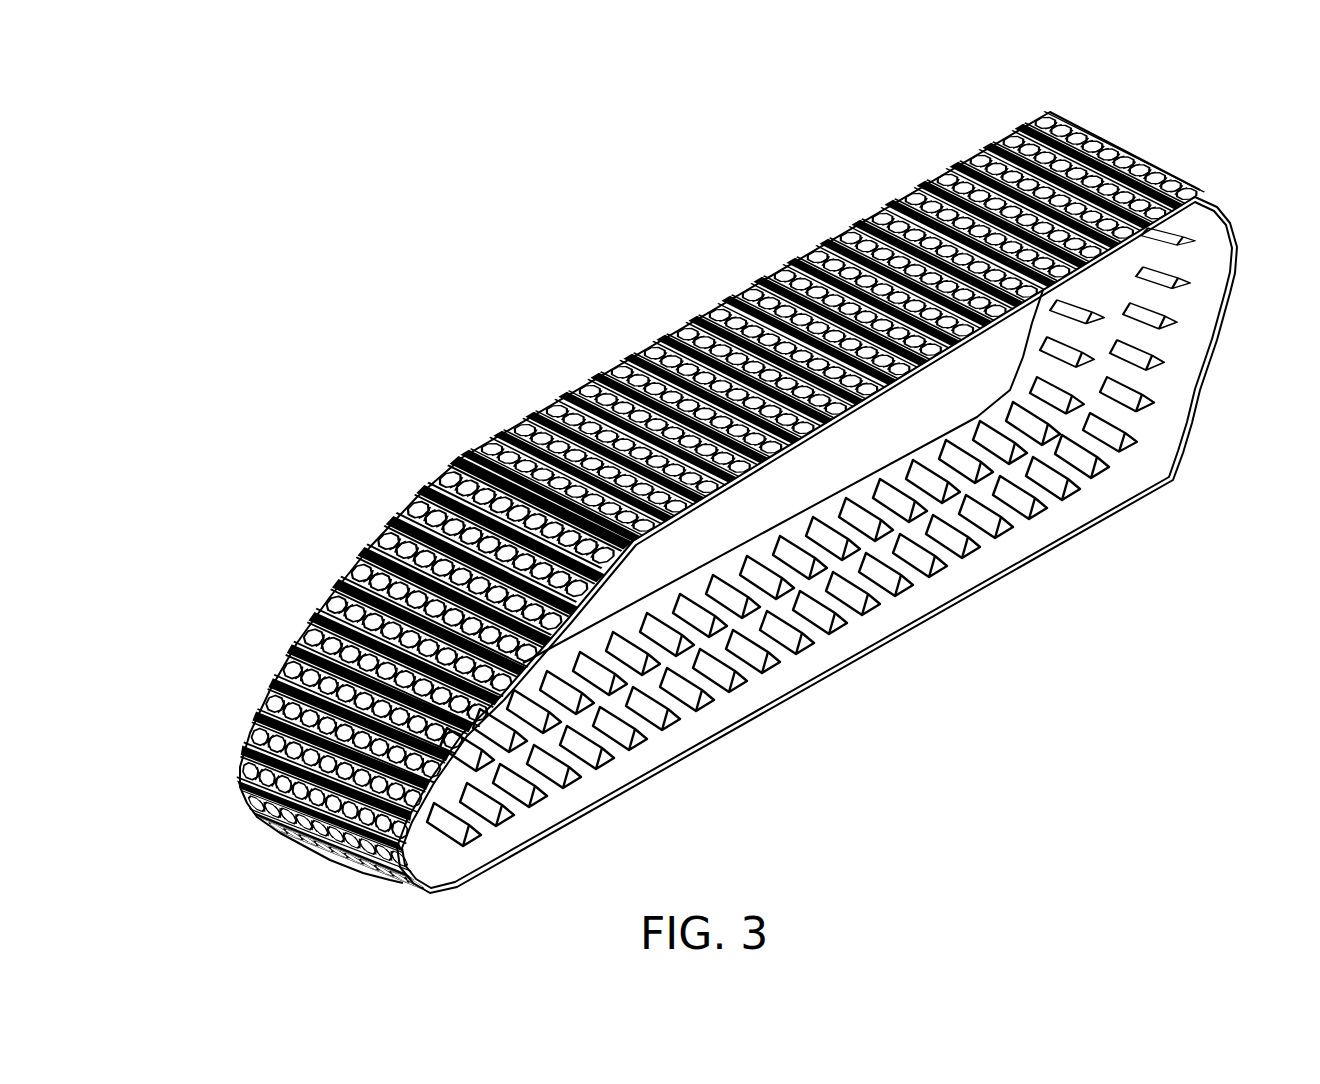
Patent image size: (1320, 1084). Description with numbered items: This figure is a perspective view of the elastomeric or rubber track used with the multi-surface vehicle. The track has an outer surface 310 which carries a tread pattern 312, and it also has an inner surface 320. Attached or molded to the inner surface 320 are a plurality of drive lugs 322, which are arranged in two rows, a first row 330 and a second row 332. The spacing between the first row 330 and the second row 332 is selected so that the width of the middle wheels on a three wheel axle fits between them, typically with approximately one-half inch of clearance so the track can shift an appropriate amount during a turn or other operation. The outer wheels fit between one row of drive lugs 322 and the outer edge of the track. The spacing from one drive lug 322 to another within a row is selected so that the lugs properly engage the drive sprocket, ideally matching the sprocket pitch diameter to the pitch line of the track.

The outer surface 310 is at (670, 307).
The tread pattern 312 is at (447, 442).
The inner surface 320 is at (807, 660).
The drive lugs 322 is at (620, 760).
The first row 330 is at (1025, 497).
The second row 332 is at (957, 458).